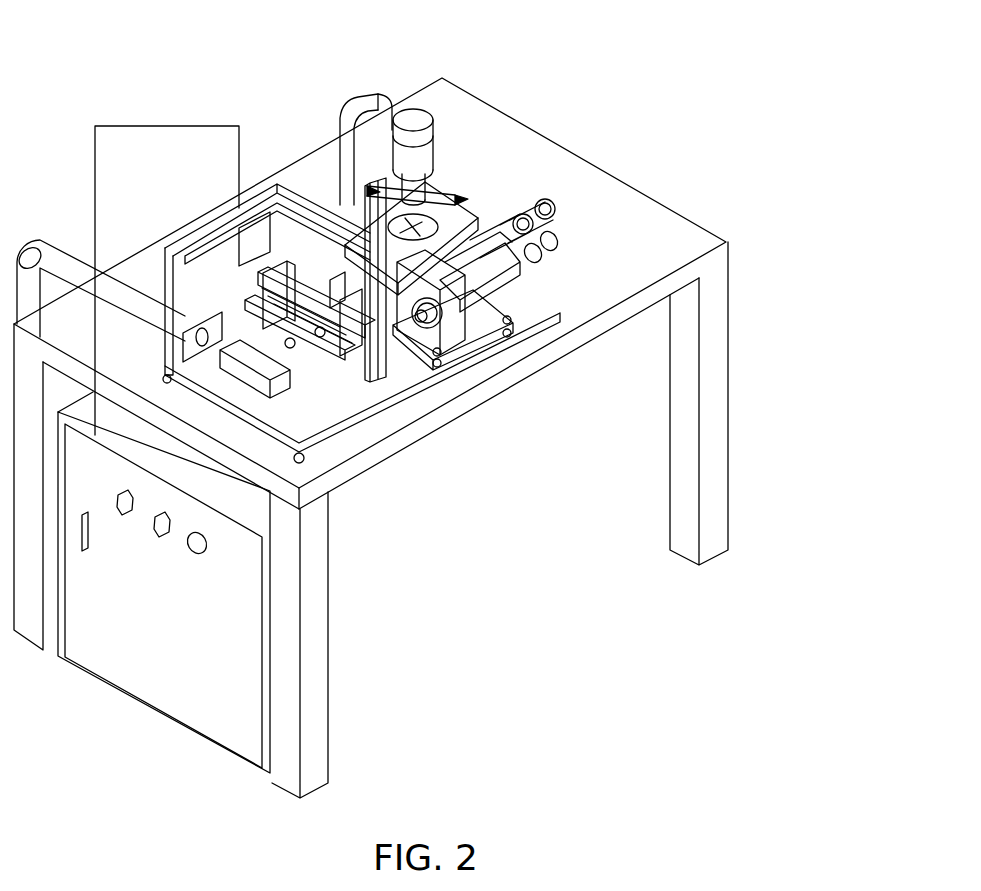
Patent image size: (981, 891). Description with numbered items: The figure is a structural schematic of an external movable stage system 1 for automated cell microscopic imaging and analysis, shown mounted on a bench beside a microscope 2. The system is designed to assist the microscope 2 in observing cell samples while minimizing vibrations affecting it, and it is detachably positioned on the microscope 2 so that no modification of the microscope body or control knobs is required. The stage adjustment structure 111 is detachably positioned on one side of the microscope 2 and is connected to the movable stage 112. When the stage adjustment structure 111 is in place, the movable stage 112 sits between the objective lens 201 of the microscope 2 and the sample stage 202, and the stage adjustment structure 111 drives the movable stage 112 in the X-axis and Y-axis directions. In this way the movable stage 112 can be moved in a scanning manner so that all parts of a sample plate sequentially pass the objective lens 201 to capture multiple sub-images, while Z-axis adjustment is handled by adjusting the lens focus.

The external movable stage system for automated cell microscopic imaging and analysi 1 is at (165, 108).
The microscope 2 is at (352, 98).
The stage adjustment structure 111 is at (332, 195).
The movable stage 112 is at (455, 210).
The objective lens 201 is at (430, 148).
The sample stage 202 is at (540, 215).